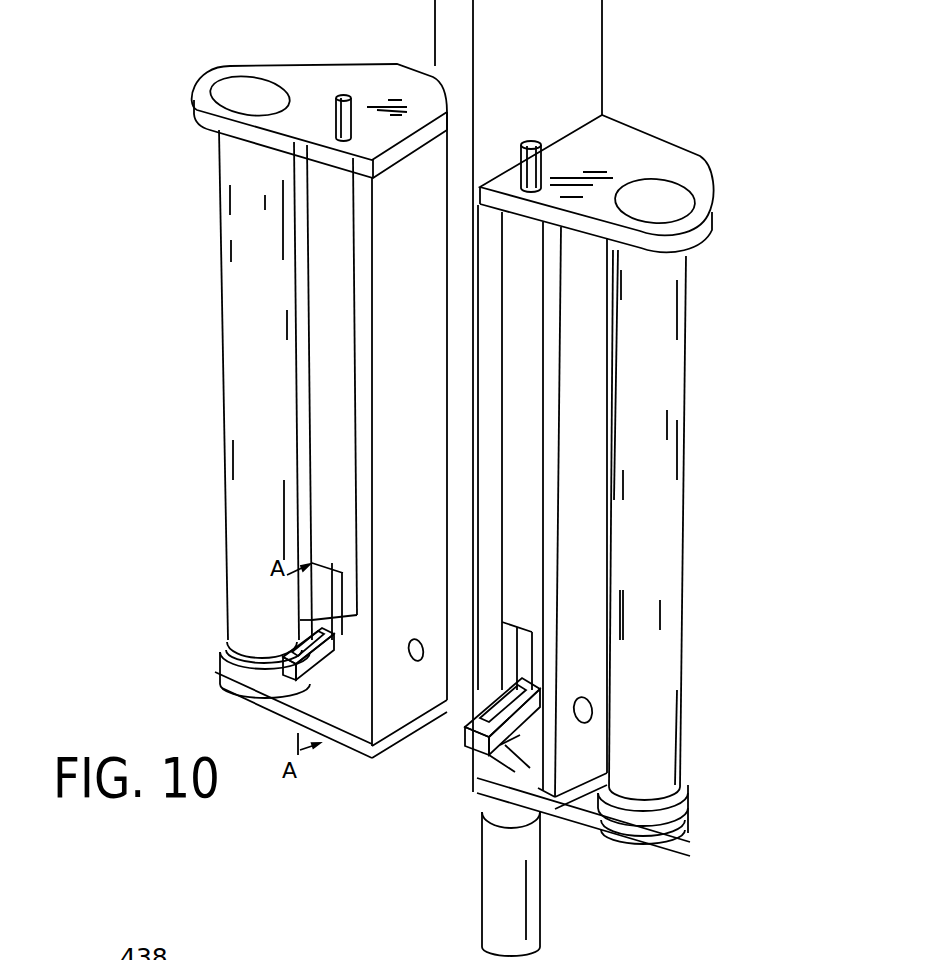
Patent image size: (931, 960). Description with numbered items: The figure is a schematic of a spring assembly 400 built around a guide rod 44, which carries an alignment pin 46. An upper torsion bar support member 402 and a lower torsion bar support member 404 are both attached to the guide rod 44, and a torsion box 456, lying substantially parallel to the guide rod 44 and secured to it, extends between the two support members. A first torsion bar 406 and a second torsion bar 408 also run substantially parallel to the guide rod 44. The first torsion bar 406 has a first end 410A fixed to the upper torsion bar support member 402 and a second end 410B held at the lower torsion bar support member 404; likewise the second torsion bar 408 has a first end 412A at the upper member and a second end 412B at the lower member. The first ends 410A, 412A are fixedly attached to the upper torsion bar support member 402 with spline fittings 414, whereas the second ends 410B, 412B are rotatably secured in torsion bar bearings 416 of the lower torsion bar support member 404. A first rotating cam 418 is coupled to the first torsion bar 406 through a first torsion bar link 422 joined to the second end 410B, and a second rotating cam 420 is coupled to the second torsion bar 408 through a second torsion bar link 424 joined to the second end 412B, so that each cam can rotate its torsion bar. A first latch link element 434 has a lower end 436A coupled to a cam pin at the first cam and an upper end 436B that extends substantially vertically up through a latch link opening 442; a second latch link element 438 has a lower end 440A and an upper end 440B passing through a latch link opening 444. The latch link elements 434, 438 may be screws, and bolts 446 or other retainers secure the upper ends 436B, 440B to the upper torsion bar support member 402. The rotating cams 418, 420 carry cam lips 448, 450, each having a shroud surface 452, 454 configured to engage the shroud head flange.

The guide rod 44 is at (593, 50).
The alignment pin 46 is at (525, 927).
The spring assembly 400 is at (688, 48).
The upper torsion bar support member 402 is at (649, 146).
The lower torsion bar support member 404 is at (605, 833).
The first torsion bar 406 is at (677, 432).
The second torsion bar 408 is at (330, 625).
The first end of first torsion bar 410A is at (683, 253).
The second end of first torsion bar 410B is at (670, 787).
The first end of second torsion bar 412A is at (228, 147).
The second end of second torsion bar 412B is at (230, 640).
The spline fittings 414 is at (235, 88).
The torsion bar bearings 416 is at (212, 681).
The first rotating cam 418 is at (523, 722).
The second rotating cam 420 is at (350, 675).
The first torsion bar link 422 is at (683, 803).
The second torsion bar link 424 is at (250, 672).
The first latch link element 434 is at (465, 735).
The lower end of first latch link element 436A is at (525, 690).
The upper end of first latch link element 436B is at (537, 140).
The second latch link element 438 is at (360, 577).
The lower end of second latch link element 440A is at (360, 593).
The upper end of second latch link element 440B is at (342, 95).
The latch link opening 442 is at (482, 745).
The latch link opening 444 is at (357, 640).
The bolts 446 is at (333, 98).
The cam lip 448 is at (480, 755).
The cam lip 450 is at (295, 670).
The shroud surface 452 is at (487, 750).
The shroud surface 454 is at (333, 690).
The torsion box 456 is at (600, 436).